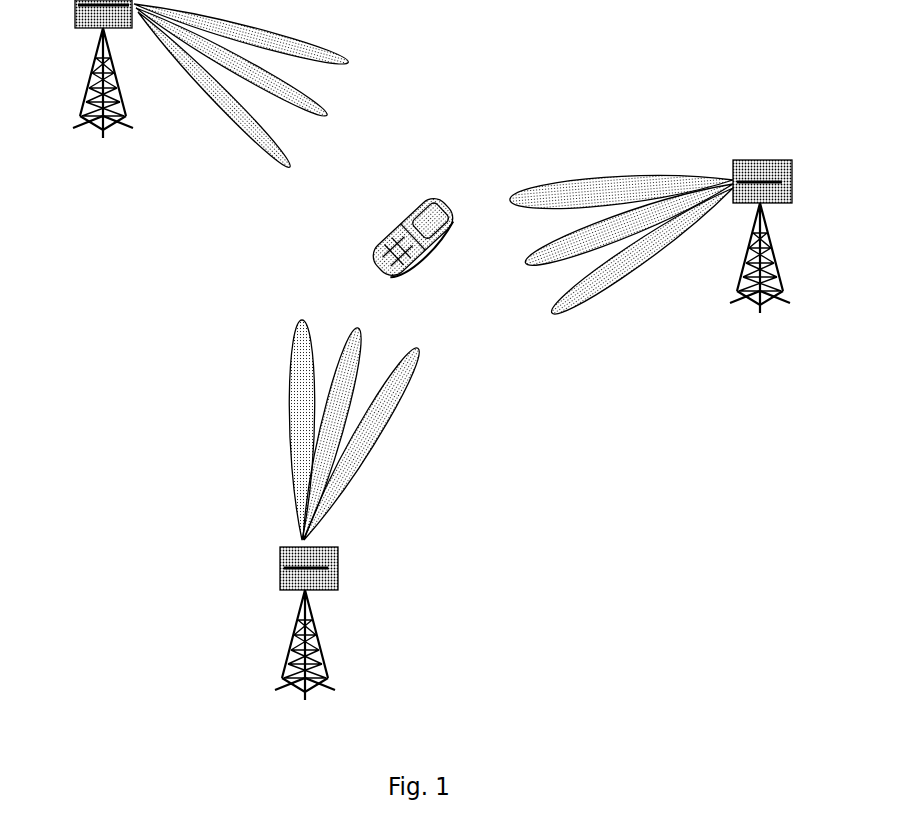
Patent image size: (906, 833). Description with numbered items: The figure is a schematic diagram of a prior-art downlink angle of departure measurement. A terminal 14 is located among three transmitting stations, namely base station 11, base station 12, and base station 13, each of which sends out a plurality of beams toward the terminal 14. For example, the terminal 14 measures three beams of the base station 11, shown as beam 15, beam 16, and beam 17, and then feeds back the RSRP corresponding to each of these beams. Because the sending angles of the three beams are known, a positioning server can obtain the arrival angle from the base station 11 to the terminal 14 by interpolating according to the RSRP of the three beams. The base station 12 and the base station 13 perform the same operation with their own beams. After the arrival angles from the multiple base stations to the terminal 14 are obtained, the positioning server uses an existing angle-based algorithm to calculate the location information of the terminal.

The base station 11 is at (105, 89).
The base station 12 is at (650, 255).
The base station 13 is at (335, 525).
The terminal 14 is at (414, 251).
The beam 15 is at (256, 35).
The beam 16 is at (281, 61).
The beam 17 is at (261, 89).